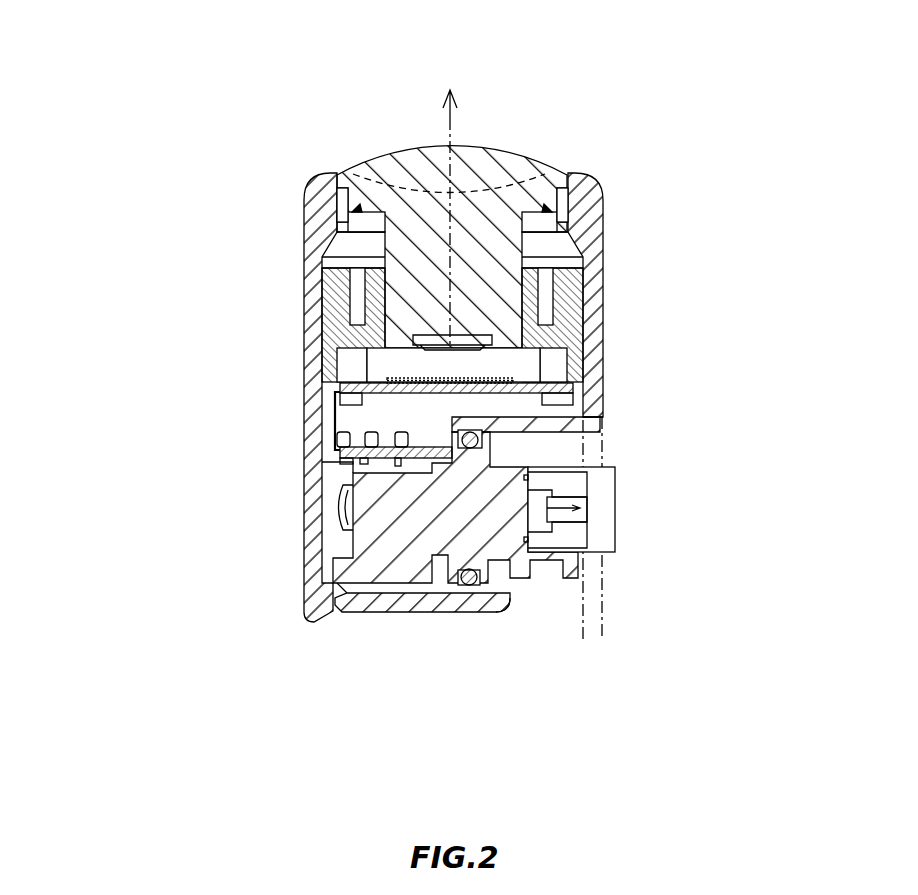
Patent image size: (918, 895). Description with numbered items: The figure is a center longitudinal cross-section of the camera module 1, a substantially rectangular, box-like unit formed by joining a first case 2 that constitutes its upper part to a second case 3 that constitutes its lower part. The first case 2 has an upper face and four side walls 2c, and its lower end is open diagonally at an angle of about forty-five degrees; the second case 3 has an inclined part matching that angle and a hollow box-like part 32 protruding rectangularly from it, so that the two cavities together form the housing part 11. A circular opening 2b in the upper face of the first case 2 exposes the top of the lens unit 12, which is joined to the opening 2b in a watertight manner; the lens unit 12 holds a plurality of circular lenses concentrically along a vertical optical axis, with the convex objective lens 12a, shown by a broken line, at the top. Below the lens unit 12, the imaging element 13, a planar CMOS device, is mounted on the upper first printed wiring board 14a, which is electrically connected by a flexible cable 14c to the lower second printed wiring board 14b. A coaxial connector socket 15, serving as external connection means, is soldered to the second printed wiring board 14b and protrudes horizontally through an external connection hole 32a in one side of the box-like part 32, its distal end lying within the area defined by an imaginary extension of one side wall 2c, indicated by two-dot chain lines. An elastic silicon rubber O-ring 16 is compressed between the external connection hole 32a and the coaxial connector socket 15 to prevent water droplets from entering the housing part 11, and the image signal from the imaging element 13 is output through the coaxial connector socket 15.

The camera module 1 is at (118, 63).
The first case 2 is at (618, 256).
The opening 2b is at (337, 173).
The side walls 2c is at (590, 417).
The second case 3 is at (517, 470).
The housing part 11 is at (455, 405).
The lens unit 12 is at (483, 217).
The objective lens 12a is at (463, 152).
The imaging element 13 is at (367, 328).
The first printed wiring board 14a is at (362, 378).
The second printed wiring board 14b is at (347, 448).
The flexible cable 14c is at (333, 420).
The coaxial connector socket 15 is at (545, 558).
The O-ring 16 is at (467, 590).
The box-like part 32 is at (412, 607).
The external connection hole 32a is at (515, 598).